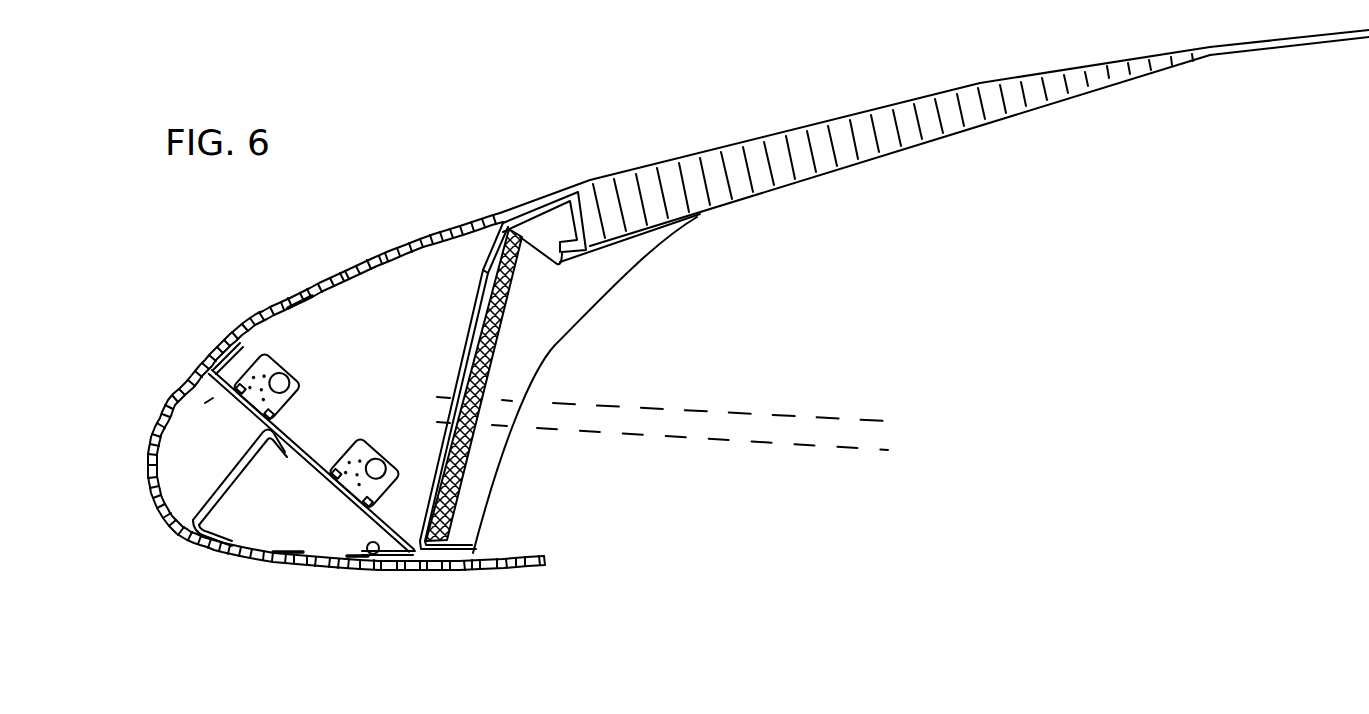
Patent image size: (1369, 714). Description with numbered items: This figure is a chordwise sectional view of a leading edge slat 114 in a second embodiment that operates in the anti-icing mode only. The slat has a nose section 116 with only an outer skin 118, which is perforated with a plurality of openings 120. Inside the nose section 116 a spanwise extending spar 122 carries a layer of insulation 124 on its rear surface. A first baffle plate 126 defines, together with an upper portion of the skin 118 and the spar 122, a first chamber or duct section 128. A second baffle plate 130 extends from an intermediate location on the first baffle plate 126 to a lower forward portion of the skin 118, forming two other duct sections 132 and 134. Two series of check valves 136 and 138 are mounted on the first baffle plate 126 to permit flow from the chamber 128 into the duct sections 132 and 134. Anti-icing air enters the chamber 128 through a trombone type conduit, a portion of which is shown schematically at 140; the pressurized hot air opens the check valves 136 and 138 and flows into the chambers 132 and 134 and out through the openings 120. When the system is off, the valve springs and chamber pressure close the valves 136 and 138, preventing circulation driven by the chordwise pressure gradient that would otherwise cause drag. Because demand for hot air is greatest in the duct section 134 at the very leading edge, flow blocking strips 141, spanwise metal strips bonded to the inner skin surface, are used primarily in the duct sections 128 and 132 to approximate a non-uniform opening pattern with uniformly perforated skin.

The leading edge slat 114 is at (404, 226).
The nose section 116 is at (148, 457).
The outer skin 118 is at (255, 313).
The openings 120 is at (371, 258).
The spar 122 is at (500, 317).
The layer of insulation 124 is at (490, 352).
The first baffle plate 126 is at (309, 452).
The first chamber or duct section 128 is at (477, 258).
The second baffle plate 130 is at (238, 472).
The duct section 132 is at (321, 538).
The duct section 134 is at (205, 403).
The check valves 136 is at (388, 458).
The check valves 138 is at (289, 379).
The conduit 140 is at (880, 433).
The flow blocking strips 141 is at (378, 266).